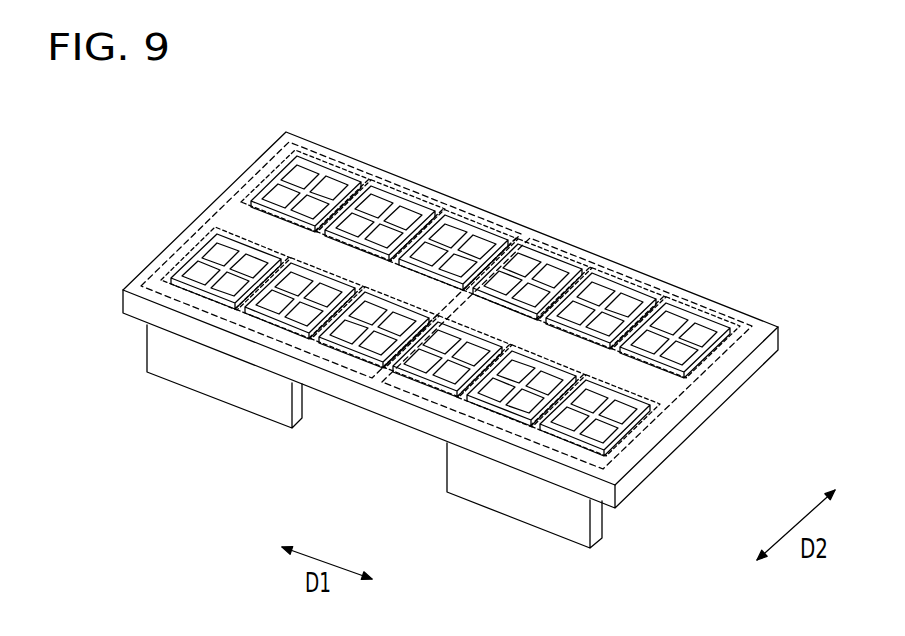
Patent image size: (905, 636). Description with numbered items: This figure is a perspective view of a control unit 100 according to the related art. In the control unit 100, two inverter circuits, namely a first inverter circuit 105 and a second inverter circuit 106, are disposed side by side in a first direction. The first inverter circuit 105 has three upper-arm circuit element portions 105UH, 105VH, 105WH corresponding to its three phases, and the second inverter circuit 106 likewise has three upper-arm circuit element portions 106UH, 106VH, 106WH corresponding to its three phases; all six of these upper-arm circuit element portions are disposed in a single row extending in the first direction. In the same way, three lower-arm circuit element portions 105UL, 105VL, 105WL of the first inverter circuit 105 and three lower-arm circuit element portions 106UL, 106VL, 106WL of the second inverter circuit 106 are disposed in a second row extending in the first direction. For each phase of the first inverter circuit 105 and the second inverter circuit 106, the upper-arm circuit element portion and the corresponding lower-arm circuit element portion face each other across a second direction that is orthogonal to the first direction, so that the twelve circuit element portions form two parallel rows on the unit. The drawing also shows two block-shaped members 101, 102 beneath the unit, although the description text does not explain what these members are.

The control unit 100 is at (764, 316).
The first leg / cooler block 101 is at (155, 348).
The second leg / cooler block 102 is at (597, 517).
The first inverter circuit 105 is at (232, 218).
The second inverter circuit 106 is at (677, 392).
The upper-arm circuit element portion 105UH is at (323, 178).
The upper-arm circuit element portion 105VH is at (400, 200).
The upper-arm circuit element portion 105WH is at (478, 222).
The lower-arm circuit element portion 105UL is at (200, 293).
The lower-arm circuit element portion 105VL is at (273, 325).
The lower-arm circuit element portion 105WL is at (352, 358).
The upper-arm circuit element portion 106UH is at (553, 248).
The upper-arm circuit element portion 106VH is at (622, 292).
The upper-arm circuit element portion 106WH is at (698, 320).
The lower-arm circuit element portion 106UL is at (420, 388).
The lower-arm circuit element portion 106VL is at (506, 398).
The lower-arm circuit element portion 106WL is at (577, 403).